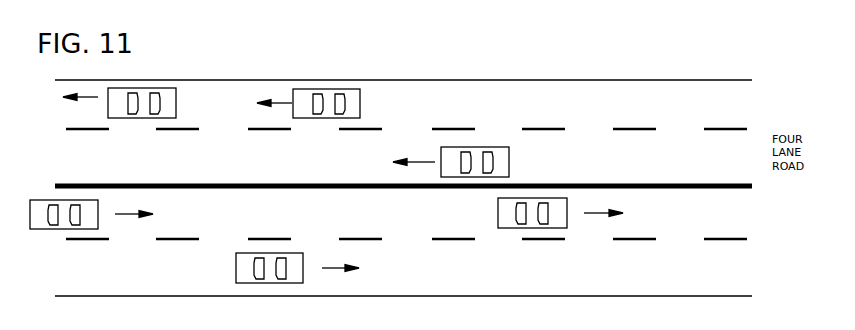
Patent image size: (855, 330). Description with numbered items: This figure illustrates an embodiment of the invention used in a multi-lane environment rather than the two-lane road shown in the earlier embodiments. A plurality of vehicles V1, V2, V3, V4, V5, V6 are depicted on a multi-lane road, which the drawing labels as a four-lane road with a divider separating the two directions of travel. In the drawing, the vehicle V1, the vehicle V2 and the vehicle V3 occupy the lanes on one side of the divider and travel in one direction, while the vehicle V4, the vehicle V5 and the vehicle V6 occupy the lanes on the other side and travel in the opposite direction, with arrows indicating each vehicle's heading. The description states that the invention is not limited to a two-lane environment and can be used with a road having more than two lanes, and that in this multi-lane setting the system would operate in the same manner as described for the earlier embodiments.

The vehicle V1 is at (322, 105).
The vehicle V2 is at (119, 104).
The vehicle V3 is at (463, 162).
The vehicle V4 is at (78, 214).
The vehicle V5 is at (285, 268).
The vehicle V6 is at (549, 213).